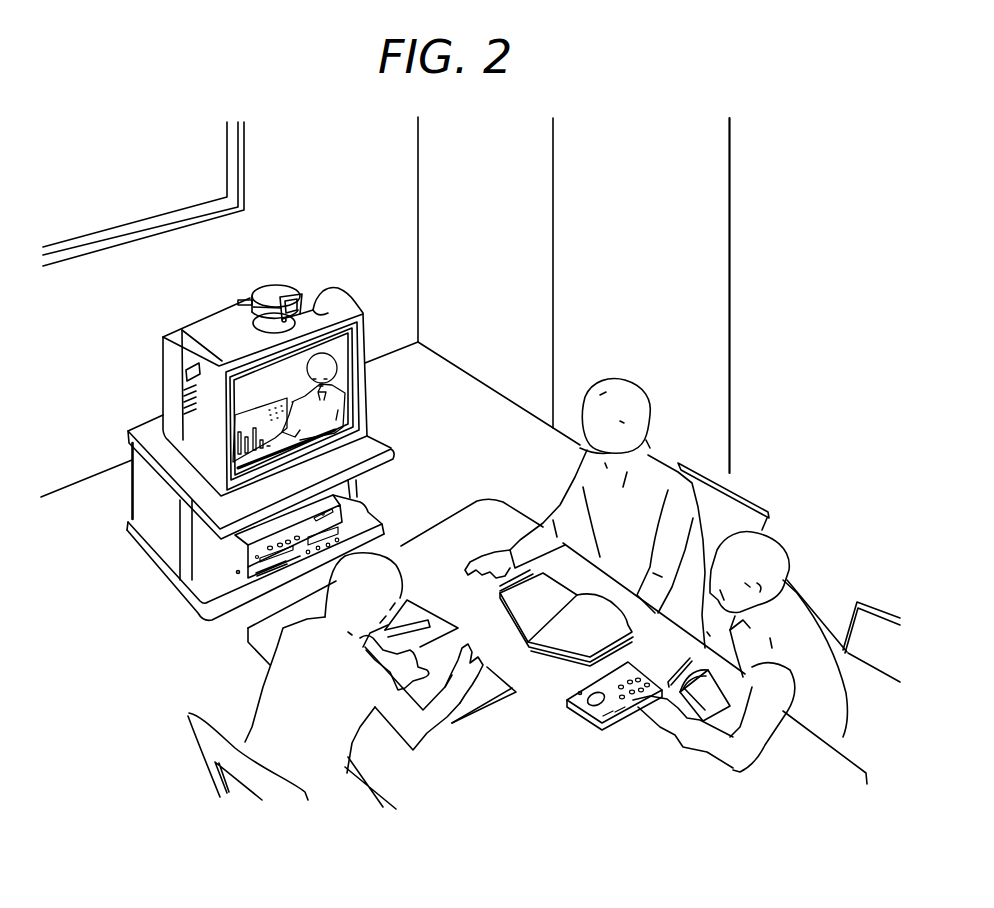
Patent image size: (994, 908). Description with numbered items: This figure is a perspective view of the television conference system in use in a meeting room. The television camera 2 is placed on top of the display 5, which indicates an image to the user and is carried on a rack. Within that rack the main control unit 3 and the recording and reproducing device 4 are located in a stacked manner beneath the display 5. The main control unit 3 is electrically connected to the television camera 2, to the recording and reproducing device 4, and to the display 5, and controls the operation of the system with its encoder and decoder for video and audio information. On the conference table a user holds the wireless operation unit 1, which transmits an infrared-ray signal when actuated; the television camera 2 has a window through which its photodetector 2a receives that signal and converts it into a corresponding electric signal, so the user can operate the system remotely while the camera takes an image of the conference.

The wireless operation unit 1 is at (598, 723).
The television camera 2 is at (285, 287).
The photodetector 2a is at (334, 294).
The main control unit 3 is at (366, 509).
The recording and reproducing device 4 is at (381, 521).
The display 5 is at (367, 349).